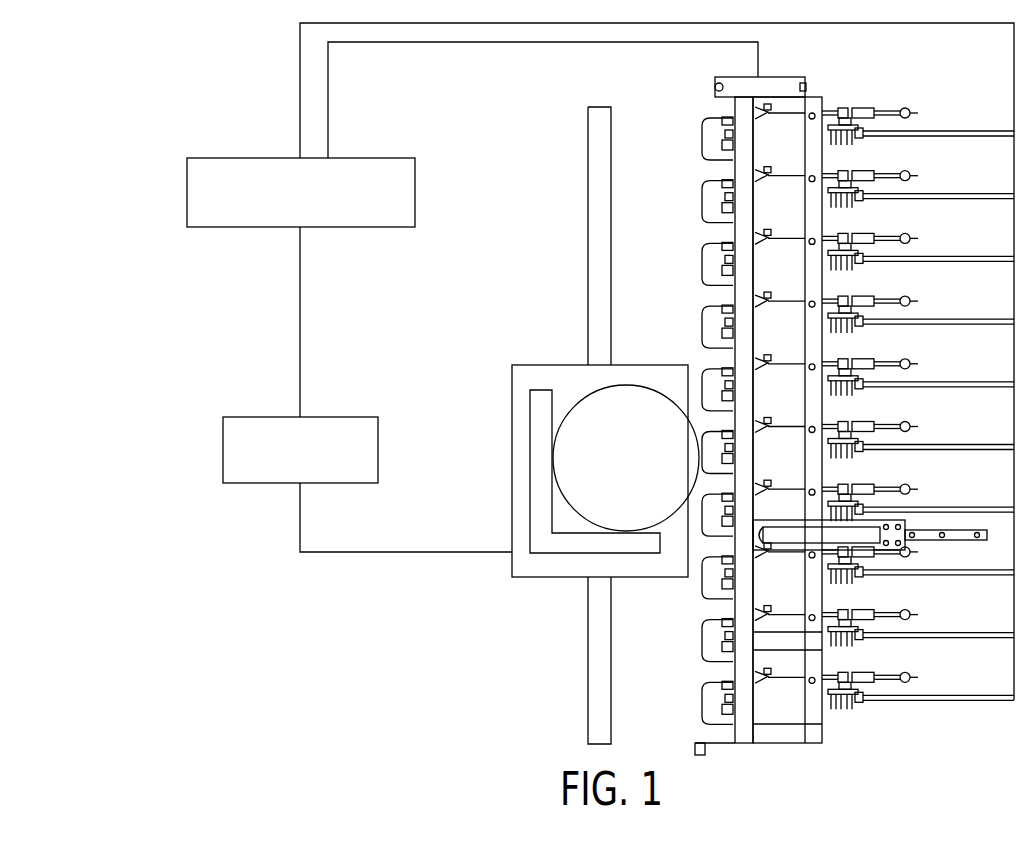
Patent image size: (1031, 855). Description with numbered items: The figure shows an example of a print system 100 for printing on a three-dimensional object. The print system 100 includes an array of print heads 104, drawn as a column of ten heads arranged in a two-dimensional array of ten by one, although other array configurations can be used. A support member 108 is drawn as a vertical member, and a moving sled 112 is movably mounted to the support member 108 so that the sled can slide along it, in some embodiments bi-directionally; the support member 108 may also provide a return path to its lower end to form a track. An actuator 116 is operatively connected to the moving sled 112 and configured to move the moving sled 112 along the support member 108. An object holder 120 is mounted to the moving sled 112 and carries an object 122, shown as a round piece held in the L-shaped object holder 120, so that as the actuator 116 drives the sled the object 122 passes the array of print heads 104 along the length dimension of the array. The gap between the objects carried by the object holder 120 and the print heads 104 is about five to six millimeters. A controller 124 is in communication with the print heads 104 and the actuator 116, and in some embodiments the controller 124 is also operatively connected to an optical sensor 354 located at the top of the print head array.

The print system 100 is at (228, 98).
The print heads 104 is at (690, 238).
The support member 108 is at (588, 665).
The moving sled 112 is at (512, 530).
The actuator 116 is at (343, 416).
The object holder 120 is at (530, 462).
The object 122 is at (582, 397).
The controller 124 is at (392, 228).
The optical sensor 354 is at (797, 78).